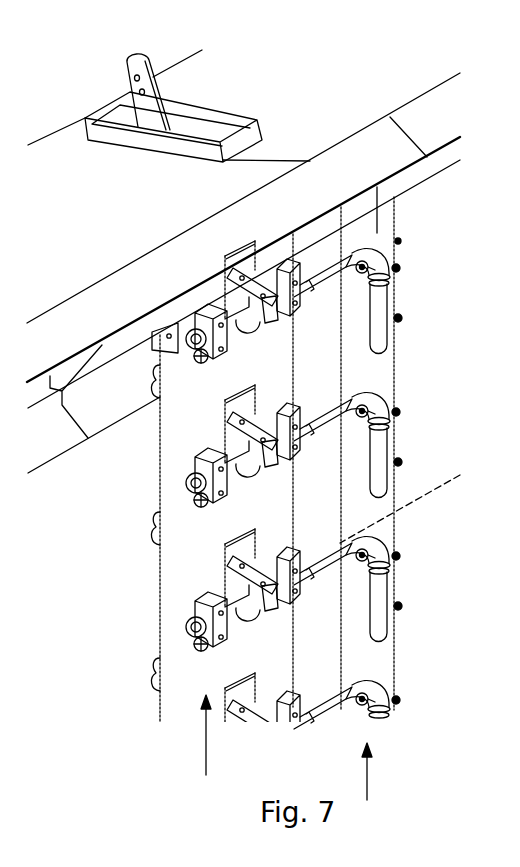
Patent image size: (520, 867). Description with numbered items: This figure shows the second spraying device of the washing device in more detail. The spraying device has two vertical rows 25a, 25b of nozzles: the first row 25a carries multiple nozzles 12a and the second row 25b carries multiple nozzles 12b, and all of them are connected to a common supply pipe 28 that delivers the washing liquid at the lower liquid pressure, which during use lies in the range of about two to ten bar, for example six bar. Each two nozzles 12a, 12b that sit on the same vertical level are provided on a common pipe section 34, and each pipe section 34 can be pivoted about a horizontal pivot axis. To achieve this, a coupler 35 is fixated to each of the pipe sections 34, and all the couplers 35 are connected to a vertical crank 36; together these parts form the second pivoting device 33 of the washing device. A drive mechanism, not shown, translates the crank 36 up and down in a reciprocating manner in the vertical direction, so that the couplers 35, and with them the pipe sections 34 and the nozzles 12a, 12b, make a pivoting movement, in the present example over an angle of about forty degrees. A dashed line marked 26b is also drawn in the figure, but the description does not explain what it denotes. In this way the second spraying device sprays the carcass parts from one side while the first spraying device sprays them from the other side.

The second pivoting device 33 is at (209, 94).
The vertical crank 36 is at (148, 100).
The nozzle 12a is at (187, 493).
The nozzle 12b is at (385, 271).
The common pipe section 34 is at (322, 400).
The common supply pipe 28 is at (398, 492).
The conduit 26b is at (447, 483).
The coupler 35 is at (233, 560).
The vertical row 25a is at (205, 757).
The vertical row 25b is at (392, 783).